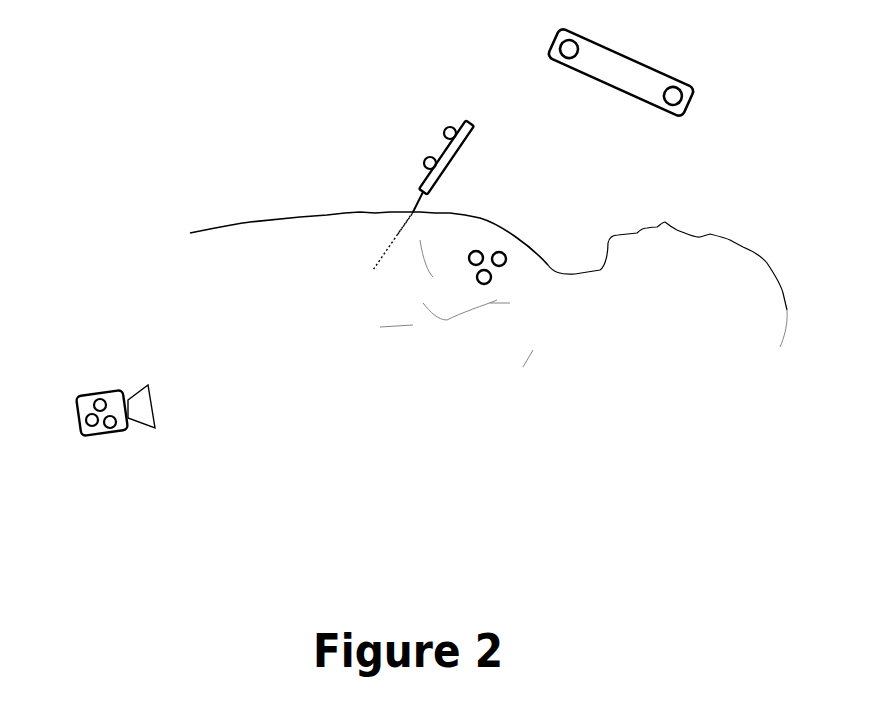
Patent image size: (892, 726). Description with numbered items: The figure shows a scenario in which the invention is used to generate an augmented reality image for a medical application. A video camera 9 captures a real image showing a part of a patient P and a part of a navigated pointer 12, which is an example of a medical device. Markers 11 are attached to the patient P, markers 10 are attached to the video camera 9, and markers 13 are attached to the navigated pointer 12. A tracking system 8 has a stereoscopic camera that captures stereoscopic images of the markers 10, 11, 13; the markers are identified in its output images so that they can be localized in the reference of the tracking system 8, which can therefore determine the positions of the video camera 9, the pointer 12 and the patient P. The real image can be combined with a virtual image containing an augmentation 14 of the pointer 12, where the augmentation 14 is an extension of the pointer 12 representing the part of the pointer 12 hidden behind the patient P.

The tracking system 8 is at (672, 78).
The video camera 9 is at (83, 437).
The markers 10 is at (100, 393).
The markers 11 is at (505, 255).
The navigated pointer 12 is at (472, 133).
The markers 13 is at (445, 129).
The augmentation 14 is at (397, 230).
The patient P is at (738, 243).